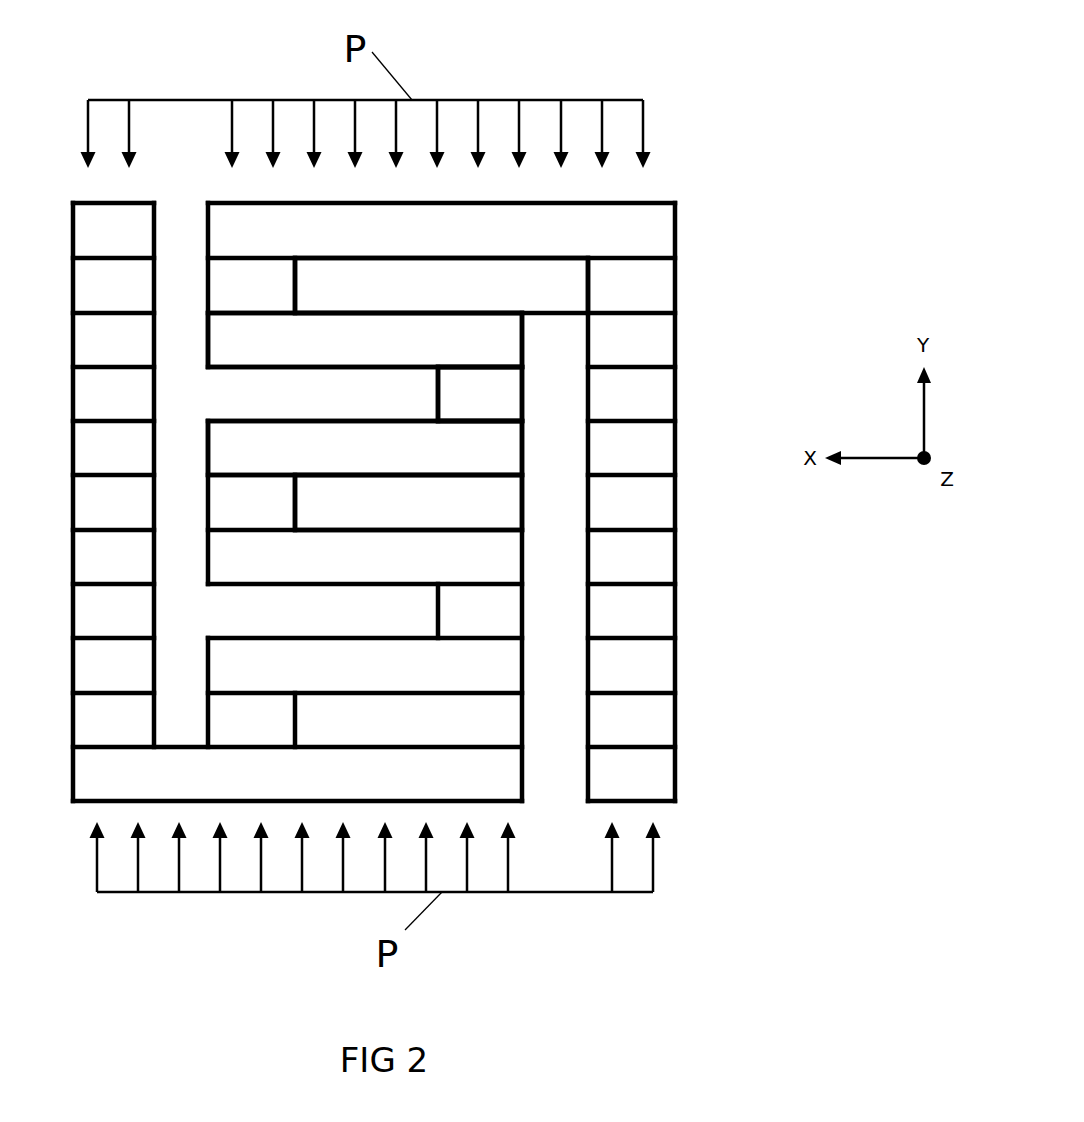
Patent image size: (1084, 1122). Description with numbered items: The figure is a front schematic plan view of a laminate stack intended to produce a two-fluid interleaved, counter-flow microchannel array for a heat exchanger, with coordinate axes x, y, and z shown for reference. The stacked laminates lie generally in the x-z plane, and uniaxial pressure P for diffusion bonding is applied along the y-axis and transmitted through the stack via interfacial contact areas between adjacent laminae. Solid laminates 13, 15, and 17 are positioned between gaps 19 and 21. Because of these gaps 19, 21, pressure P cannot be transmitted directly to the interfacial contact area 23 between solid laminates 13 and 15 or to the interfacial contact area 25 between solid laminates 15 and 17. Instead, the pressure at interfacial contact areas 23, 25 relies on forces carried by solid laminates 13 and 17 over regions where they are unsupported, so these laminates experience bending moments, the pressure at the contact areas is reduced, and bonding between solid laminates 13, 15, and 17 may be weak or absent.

The solid laminate 13 is at (365, 340).
The solid laminate 15 is at (480, 394).
The solid laminate 17 is at (365, 448).
The gap 19 is at (472, 283).
The gap 21 is at (468, 502).
The interfacial contact area 23 is at (460, 366).
The interfacial contact area 25 is at (455, 423).